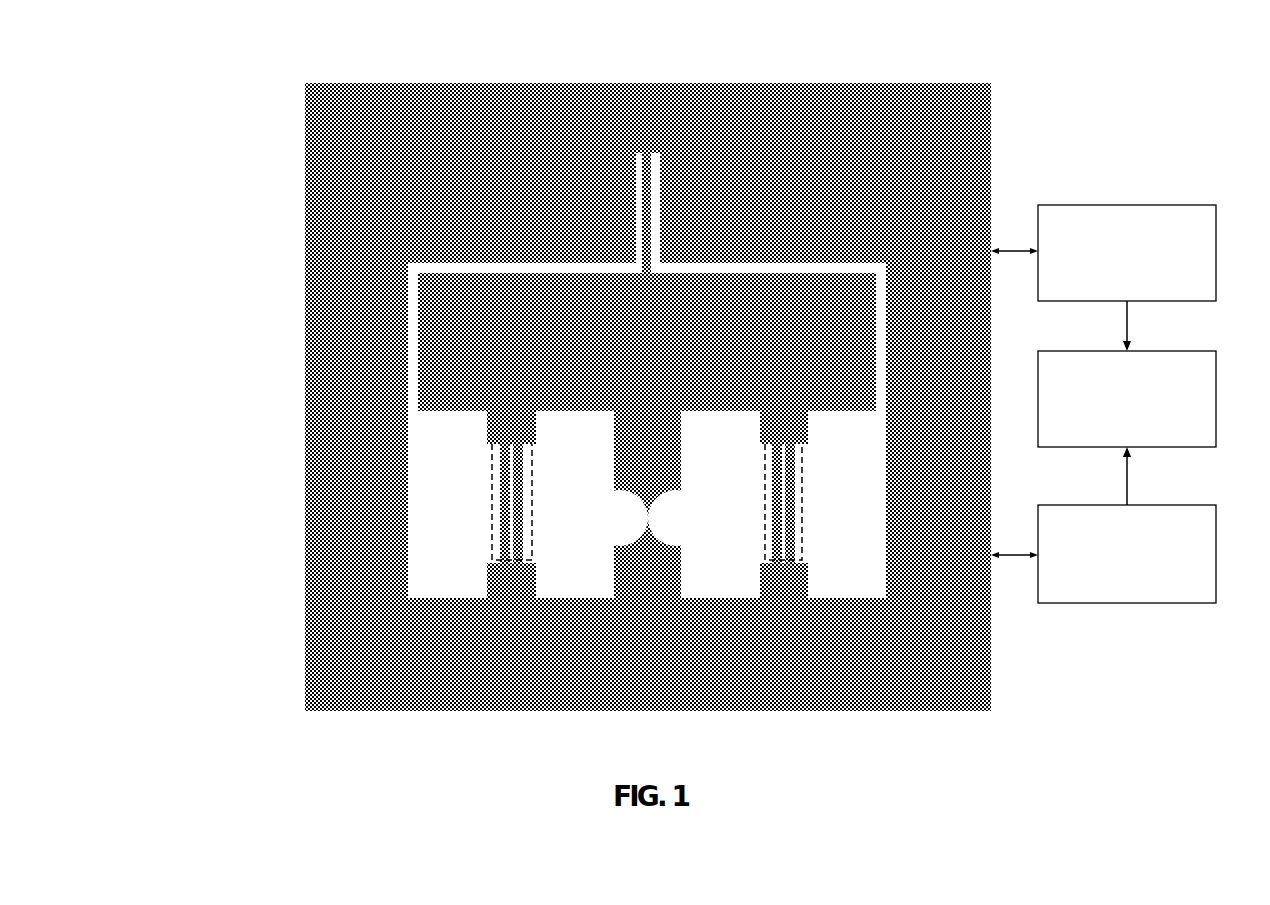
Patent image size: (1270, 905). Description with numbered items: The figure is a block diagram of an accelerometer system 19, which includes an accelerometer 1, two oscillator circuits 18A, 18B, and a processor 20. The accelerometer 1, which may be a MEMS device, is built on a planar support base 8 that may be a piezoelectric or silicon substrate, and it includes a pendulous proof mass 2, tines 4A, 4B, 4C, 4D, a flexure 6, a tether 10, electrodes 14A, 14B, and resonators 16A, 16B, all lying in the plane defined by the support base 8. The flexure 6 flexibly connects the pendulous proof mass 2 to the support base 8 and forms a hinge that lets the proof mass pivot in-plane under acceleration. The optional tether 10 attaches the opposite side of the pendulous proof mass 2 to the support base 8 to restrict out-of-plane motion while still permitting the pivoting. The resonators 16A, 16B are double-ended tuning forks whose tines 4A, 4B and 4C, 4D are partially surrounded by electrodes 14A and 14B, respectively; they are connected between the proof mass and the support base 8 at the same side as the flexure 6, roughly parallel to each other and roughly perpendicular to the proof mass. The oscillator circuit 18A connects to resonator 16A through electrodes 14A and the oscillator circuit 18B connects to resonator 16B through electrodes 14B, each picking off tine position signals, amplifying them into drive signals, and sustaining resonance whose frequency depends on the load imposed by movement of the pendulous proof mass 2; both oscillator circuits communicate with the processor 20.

The accelerometer 1 is at (648, 383).
The pendulous proof mass 2 is at (630, 345).
The tine 4A is at (497, 508).
The tine 4B is at (508, 508).
The tine 4C is at (767, 508).
The tine 4D is at (781, 508).
The flexure 6 is at (640, 512).
The support base 8 is at (455, 168).
The tether 10 is at (638, 182).
The electrodes 14A is at (502, 503).
The electrodes 14B is at (790, 503).
The resonator 16A is at (490, 610).
The resonator 16B is at (780, 610).
The oscillator circuit 18A is at (1103, 278).
The oscillator circuit 18B is at (1103, 525).
The accelerometer system 19 is at (694, 377).
The processor 20 is at (1127, 399).